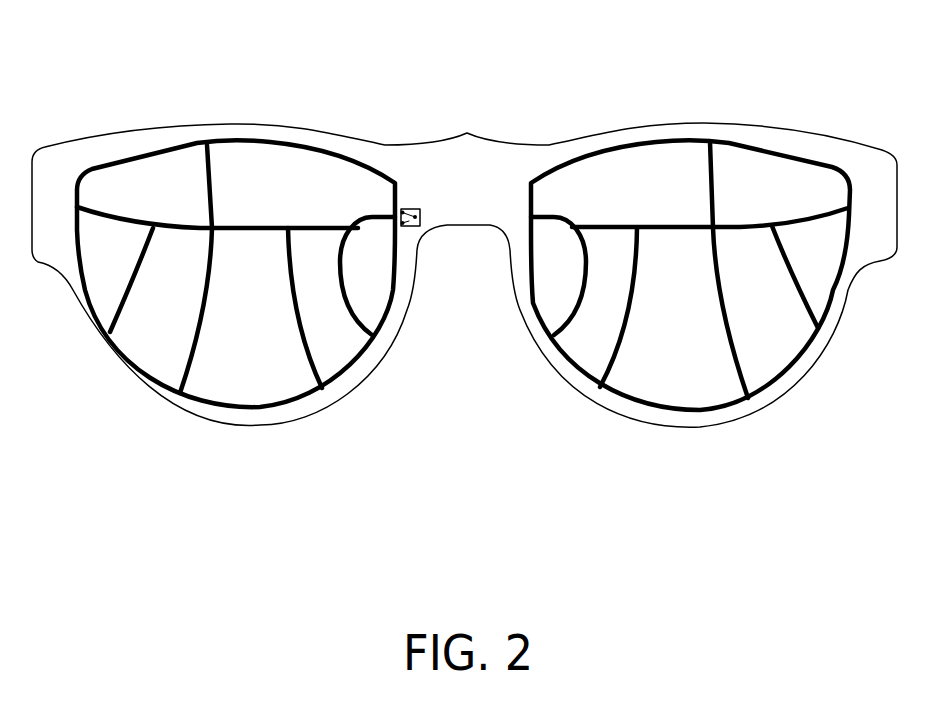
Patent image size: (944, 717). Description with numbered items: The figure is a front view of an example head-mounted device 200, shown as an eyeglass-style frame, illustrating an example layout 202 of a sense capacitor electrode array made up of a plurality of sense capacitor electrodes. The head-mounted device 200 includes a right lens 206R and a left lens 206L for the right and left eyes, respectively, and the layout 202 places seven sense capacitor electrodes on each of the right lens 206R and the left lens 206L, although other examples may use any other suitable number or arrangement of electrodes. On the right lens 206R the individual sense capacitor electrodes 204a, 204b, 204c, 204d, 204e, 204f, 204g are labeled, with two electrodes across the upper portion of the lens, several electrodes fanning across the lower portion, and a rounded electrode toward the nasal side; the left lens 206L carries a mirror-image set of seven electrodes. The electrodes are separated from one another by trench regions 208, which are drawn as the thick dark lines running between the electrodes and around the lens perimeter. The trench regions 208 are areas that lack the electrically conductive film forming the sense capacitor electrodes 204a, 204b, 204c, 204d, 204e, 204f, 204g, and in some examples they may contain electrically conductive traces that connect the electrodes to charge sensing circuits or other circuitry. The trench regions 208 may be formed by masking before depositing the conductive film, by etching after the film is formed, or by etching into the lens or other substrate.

The head-mounted device 200 is at (54, 56).
The layout 202 is at (489, 172).
The sense capacitor electrode 204a is at (183, 196).
The sense capacitor electrode 204b is at (300, 196).
The sense capacitor electrode 204c is at (137, 252).
The sense capacitor electrode 204d is at (182, 332).
The sense capacitor electrode 204e is at (268, 376).
The sense capacitor electrode 204f is at (337, 348).
The sense capacitor electrode 204g is at (370, 297).
The right lens 206R is at (308, 450).
The left lens 206L is at (611, 450).
The trench regions 208 is at (187, 396).